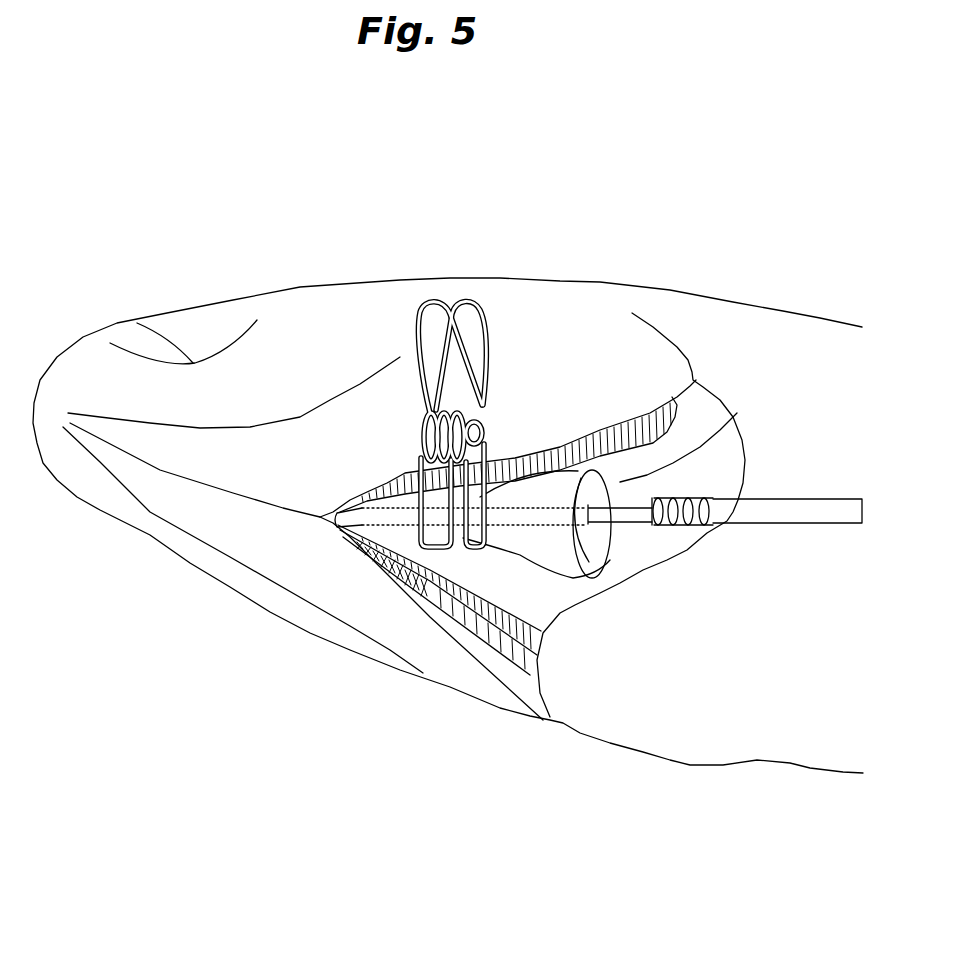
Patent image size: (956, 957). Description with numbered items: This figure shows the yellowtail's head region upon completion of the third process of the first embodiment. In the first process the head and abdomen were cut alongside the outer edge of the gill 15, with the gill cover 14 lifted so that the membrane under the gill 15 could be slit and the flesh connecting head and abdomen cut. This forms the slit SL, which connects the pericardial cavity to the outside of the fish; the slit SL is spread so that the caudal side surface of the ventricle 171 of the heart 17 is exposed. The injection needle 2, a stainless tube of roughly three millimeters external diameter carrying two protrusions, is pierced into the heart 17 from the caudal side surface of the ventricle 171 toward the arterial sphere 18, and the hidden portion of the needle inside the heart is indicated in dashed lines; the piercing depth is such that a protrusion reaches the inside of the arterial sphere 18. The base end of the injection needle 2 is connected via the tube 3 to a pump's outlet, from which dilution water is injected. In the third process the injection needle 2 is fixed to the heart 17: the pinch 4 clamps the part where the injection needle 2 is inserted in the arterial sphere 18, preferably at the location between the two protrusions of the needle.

The injection needle 2 is at (515, 688).
The tube 3 is at (757, 703).
The pinch 4 is at (464, 347).
The gill cover 14 is at (521, 335).
The gill 15 is at (303, 621).
The heart 17 is at (685, 428).
The arterial sphere 18 is at (439, 679).
The ventricle 171 is at (574, 687).
The slit SL is at (448, 602).